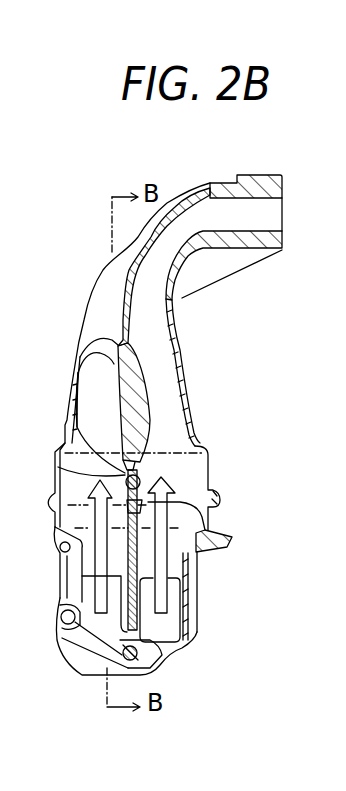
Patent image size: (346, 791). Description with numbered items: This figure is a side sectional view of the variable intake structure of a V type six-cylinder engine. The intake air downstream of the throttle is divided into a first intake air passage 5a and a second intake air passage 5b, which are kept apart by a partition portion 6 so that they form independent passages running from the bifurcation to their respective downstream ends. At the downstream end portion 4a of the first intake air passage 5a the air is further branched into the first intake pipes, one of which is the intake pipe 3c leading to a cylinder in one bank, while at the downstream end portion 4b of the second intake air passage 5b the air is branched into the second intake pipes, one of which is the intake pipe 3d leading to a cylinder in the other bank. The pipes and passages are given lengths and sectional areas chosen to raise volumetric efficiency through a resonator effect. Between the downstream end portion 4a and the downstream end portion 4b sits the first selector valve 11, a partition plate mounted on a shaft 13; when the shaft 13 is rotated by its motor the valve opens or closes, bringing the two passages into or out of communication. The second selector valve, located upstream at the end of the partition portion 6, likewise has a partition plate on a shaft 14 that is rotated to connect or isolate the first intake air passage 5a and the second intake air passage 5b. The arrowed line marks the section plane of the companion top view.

The intake pipe 3c is at (78, 345).
The intake pipe 3d is at (193, 372).
The first selector valve 11 is at (73, 413).
The downstream end portion of the first intake air passage 4a is at (58, 488).
The downstream end portion of the second intake air passage 4b is at (190, 483).
The shaft 13 is at (73, 485).
The first intake air passage 5a is at (90, 593).
The second intake air passage 5b is at (162, 595).
The partition portion 6 is at (130, 610).
The shaft 14 is at (153, 660).